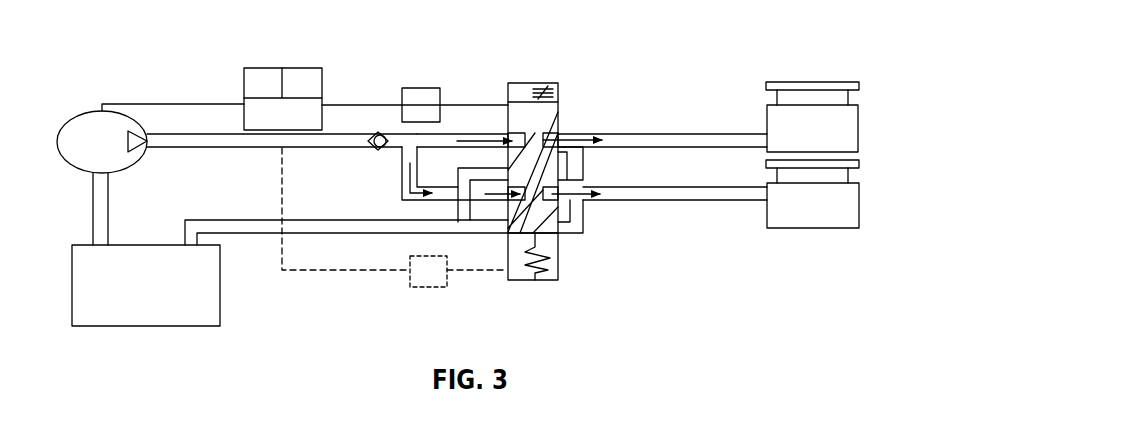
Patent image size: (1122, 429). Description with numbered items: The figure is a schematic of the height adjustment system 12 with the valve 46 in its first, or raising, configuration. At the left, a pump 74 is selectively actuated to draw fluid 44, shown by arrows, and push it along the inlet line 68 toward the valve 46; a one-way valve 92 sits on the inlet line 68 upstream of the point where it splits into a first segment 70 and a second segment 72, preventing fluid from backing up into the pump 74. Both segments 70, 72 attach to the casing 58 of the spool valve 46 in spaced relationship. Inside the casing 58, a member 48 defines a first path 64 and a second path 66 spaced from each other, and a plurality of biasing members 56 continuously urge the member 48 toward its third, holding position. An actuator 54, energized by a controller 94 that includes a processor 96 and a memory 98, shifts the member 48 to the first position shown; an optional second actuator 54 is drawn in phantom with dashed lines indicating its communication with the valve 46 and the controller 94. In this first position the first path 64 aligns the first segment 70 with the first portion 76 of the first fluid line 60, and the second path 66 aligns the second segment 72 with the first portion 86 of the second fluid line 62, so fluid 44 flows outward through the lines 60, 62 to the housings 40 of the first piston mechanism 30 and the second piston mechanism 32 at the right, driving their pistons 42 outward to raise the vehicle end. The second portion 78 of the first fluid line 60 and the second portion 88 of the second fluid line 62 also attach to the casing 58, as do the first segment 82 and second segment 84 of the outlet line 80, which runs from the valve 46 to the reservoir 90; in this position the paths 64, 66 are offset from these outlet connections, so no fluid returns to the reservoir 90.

The height adjustment system 12 is at (123, 47).
The first piston mechanism 30 is at (871, 91).
The second piston mechanism 32 is at (874, 203).
The housing 40 is at (850, 135).
The piston 42 is at (805, 85).
The fluid 44 is at (468, 146).
The valve 46 is at (569, 72).
The member 48 is at (524, 102).
The actuator 54 is at (411, 117).
The biasing members 56 is at (541, 83).
The casing 58 is at (540, 130).
The first fluid line 60 is at (710, 133).
The second fluid line 62 is at (713, 186).
The first path 64 is at (540, 130).
The second path 66 is at (555, 160).
The inlet line 68 is at (217, 150).
The first segment 70 is at (443, 131).
The second segment 72 is at (403, 173).
The pump 74 is at (90, 108).
The first portion 76 is at (570, 160).
The second portion 78 is at (622, 142).
The outlet line 80 is at (278, 233).
The first segment 82 is at (535, 185).
The second segment 84 is at (458, 213).
The first portion 86 is at (565, 215).
The second portion 88 is at (562, 236).
The reservoir 90 is at (120, 328).
The one-way valve 92 is at (378, 132).
The controller 94 is at (314, 99).
The processor 96 is at (252, 95).
The memory 98 is at (291, 95).